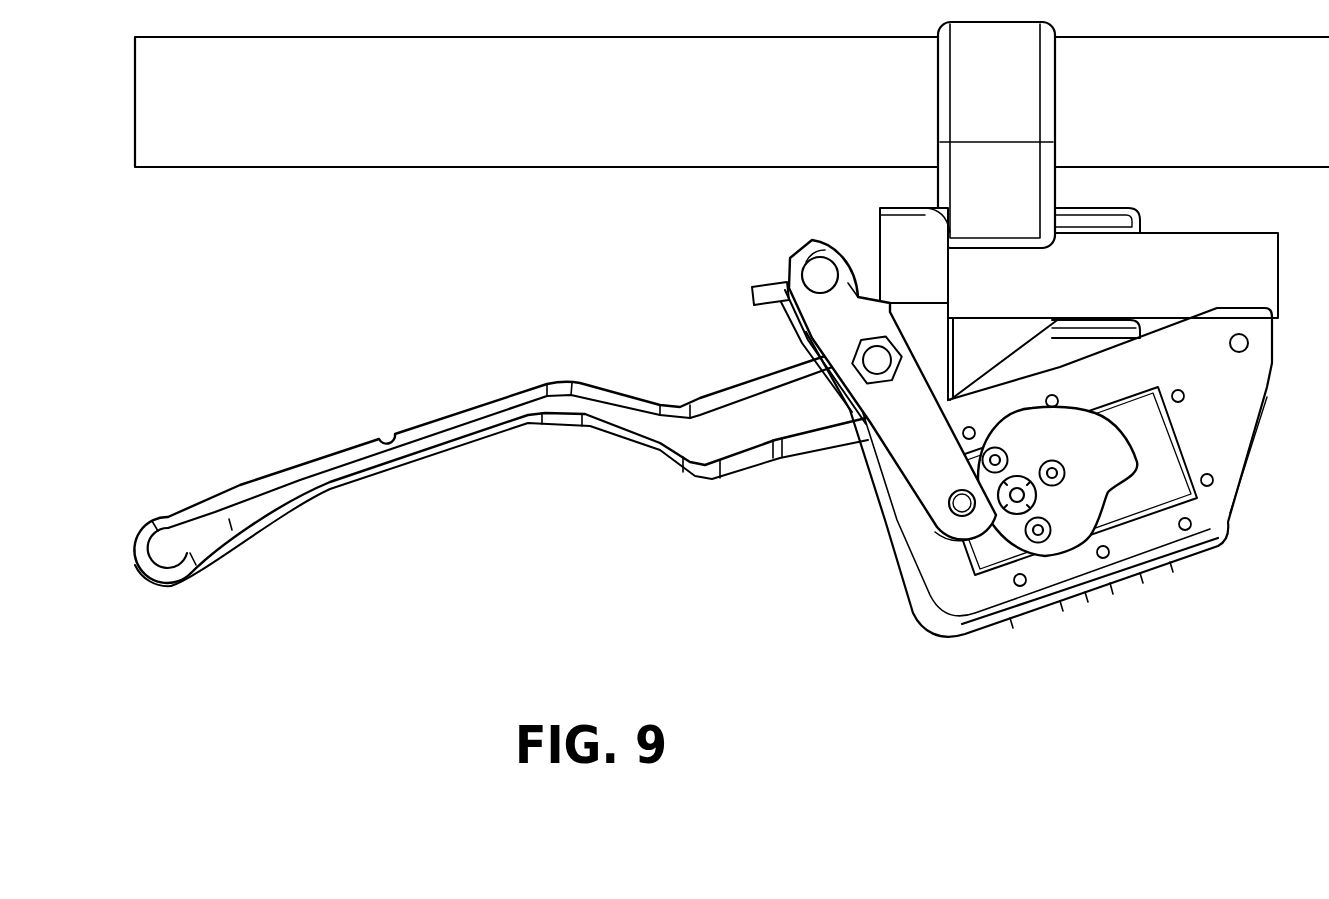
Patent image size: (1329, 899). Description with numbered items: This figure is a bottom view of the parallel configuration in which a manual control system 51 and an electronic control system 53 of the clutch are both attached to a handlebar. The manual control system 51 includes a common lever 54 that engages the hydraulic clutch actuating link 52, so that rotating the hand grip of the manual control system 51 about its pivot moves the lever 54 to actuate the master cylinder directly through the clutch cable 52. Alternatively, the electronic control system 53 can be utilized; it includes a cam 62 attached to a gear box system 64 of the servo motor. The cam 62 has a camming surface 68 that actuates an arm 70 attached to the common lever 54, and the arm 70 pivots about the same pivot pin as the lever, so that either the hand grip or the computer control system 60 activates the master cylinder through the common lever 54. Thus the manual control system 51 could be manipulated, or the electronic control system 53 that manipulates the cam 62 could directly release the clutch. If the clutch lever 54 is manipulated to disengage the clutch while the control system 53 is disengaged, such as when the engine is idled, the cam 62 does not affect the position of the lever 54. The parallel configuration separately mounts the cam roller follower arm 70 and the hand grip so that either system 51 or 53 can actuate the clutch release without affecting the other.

The manual control system 51 is at (456, 506).
The hydraulic clutch actuating link 52 is at (807, 342).
The electronic control system 53 is at (1082, 706).
The common lever 54 is at (787, 310).
The computer control system 60 is at (1130, 497).
The cam 62 is at (1088, 515).
The gear box system 64 is at (1017, 497).
The camming surface 68 is at (1055, 545).
The arm 70 is at (922, 462).